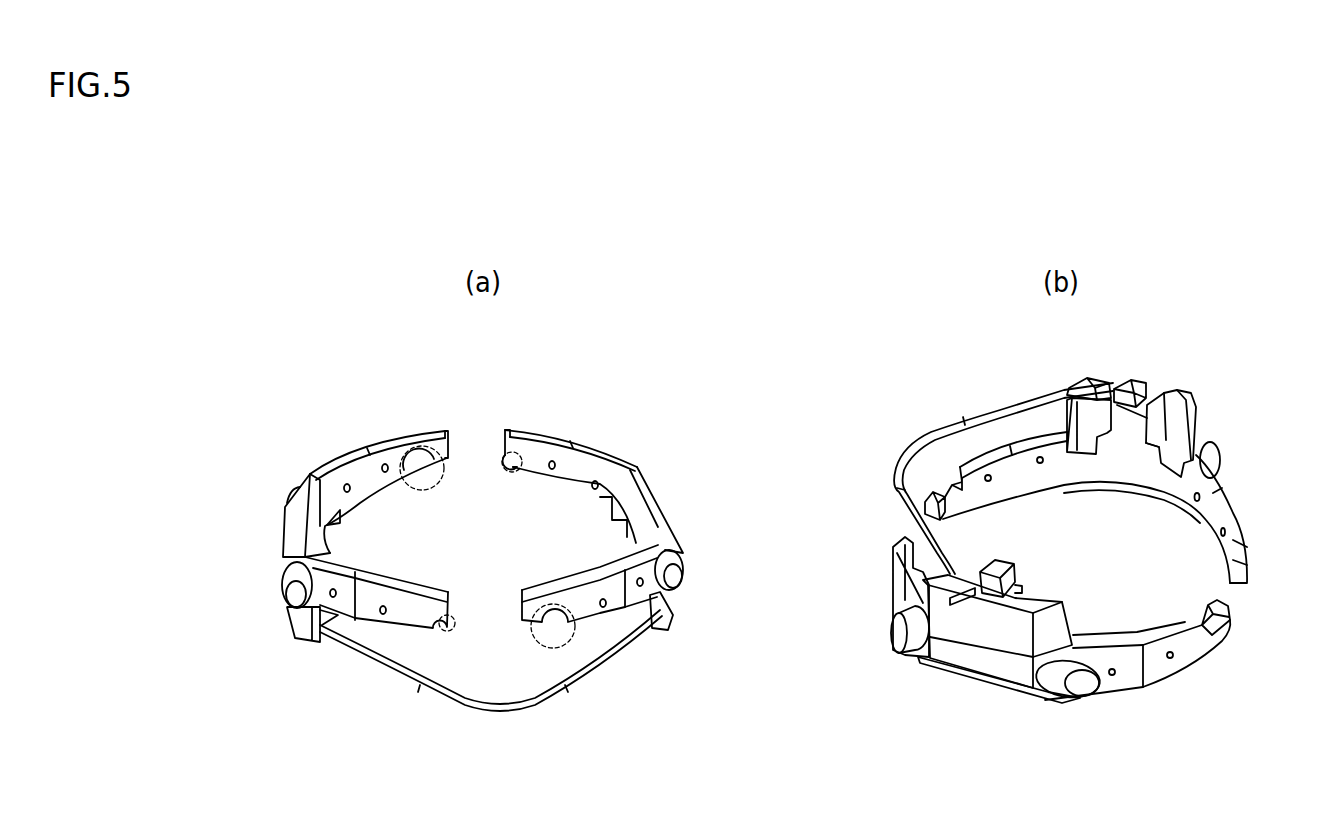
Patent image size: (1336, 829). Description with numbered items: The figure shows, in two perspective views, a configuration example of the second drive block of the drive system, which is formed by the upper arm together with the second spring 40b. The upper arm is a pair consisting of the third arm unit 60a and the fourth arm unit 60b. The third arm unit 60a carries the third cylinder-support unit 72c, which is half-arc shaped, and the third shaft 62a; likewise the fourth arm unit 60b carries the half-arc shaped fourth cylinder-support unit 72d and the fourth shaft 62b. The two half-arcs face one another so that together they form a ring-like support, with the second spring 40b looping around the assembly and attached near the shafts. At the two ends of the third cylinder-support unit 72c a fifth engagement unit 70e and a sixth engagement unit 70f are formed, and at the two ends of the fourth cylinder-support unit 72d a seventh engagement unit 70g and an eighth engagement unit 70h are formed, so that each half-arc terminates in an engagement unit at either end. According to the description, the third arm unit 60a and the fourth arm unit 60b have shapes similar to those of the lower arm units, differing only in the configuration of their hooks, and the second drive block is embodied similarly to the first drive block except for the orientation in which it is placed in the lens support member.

The second spring 40b is at (617, 650).
The third arm unit 60a is at (668, 527).
The fourth arm unit 60b is at (288, 533).
The third shaft 62a is at (685, 583).
The fourth shaft 62b is at (290, 596).
The third cylinder-support unit 72c is at (583, 478).
The fourth cylinder-support unit 72d is at (360, 478).
The fifth engagement unit 70e is at (530, 650).
The sixth engagement unit 70f is at (510, 472).
The seventh engagement unit 70g is at (443, 487).
The eighth engagement unit 70h is at (458, 633).